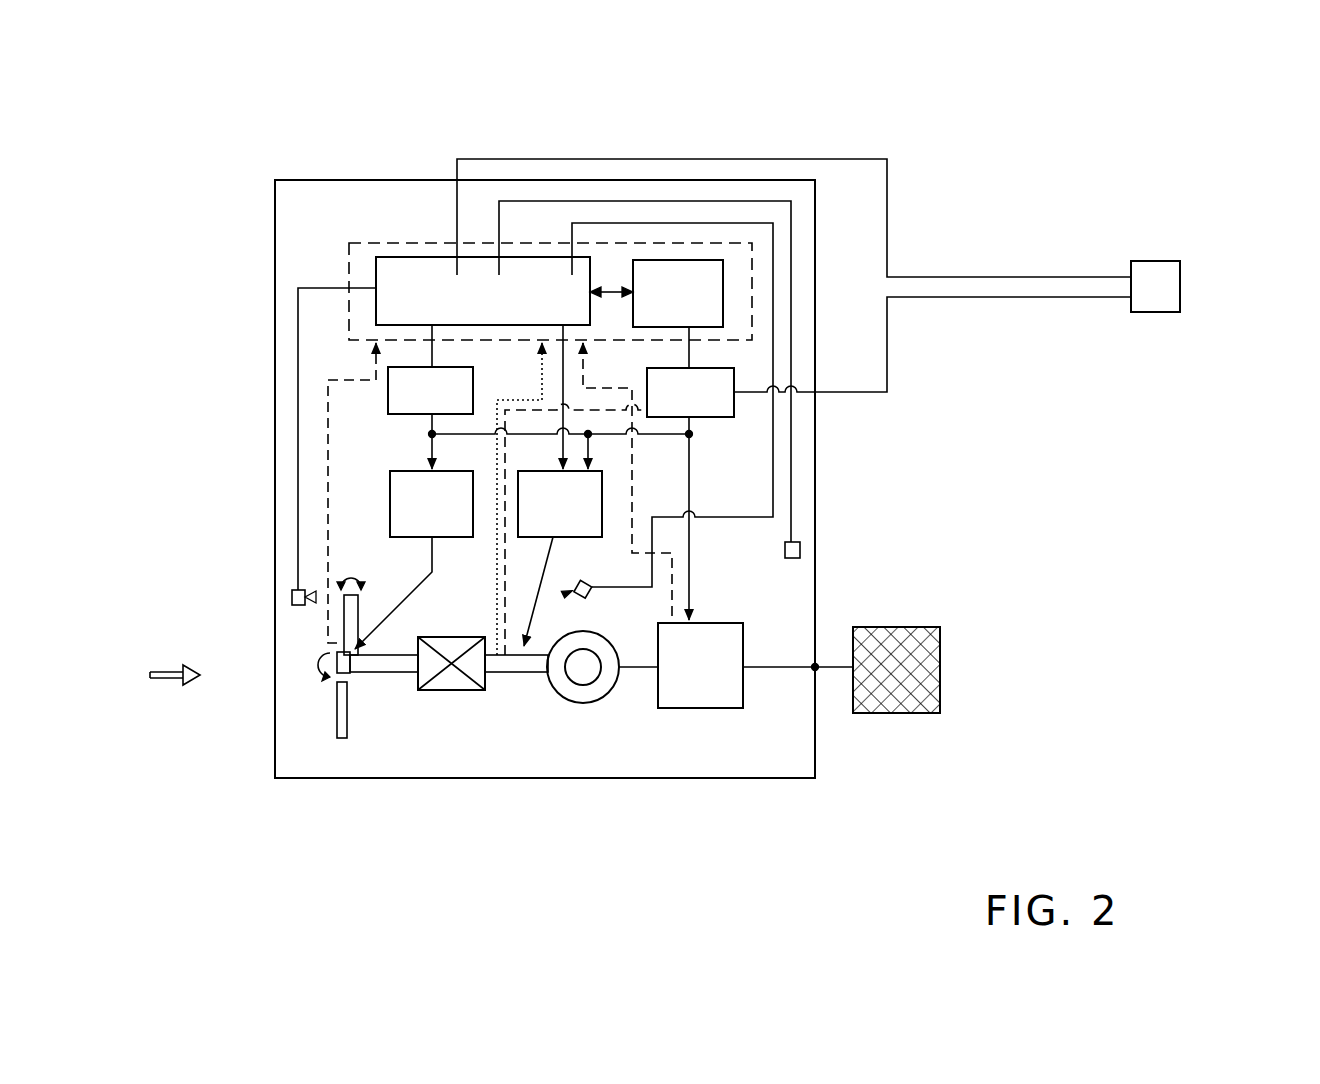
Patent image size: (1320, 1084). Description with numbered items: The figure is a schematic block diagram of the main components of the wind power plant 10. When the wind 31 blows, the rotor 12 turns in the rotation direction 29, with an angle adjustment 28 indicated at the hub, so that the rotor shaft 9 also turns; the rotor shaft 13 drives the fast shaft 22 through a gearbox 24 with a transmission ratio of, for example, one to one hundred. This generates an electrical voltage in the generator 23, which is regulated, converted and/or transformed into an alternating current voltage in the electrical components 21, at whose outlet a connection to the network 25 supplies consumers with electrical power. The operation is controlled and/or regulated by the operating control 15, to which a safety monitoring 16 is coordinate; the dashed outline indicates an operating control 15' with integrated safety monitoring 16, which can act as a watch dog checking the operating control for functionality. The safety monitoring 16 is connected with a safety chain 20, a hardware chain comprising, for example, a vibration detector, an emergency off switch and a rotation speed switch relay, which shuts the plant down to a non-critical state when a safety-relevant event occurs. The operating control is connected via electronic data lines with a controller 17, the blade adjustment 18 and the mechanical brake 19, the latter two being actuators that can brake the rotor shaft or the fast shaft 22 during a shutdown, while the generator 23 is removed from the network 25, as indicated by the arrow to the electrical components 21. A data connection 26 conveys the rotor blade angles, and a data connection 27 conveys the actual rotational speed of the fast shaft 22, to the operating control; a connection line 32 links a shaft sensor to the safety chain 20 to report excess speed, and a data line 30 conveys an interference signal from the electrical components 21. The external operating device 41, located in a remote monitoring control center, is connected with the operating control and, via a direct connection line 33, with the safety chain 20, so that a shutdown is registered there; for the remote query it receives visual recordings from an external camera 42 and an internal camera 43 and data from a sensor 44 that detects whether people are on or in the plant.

The rotor shaft 9 is at (337, 655).
The wind power plant 10 is at (782, 192).
The rotor 12 is at (328, 729).
The rotor shaft 13 is at (370, 674).
The operating control 15 is at (490, 204).
The operating control with integrated safety monitoring 15' is at (629, 190).
The safety monitoring 16 is at (668, 260).
The controller 17 is at (473, 387).
The blade adjustment 18 is at (445, 515).
The mechanical brake 19 is at (574, 515).
The safety chain 20 is at (704, 406).
The electrical components 21 is at (718, 695).
The fast shaft 22 is at (507, 674).
The generator 23 is at (603, 698).
The gearbox 24 is at (443, 692).
The network 25 is at (885, 643).
The data connection 26 is at (327, 528).
The data connection 27 is at (497, 592).
The angle adjustment 28 is at (352, 572).
The rotation direction 29 is at (310, 668).
The interference signal data line 30 is at (672, 602).
The wind 31 is at (170, 680).
The connection line 32 is at (500, 565).
The connection line 33 is at (887, 345).
The operating device 41 is at (1168, 287).
The camera 42 is at (292, 597).
The camera 43 is at (589, 597).
The sensor 44 is at (802, 553).